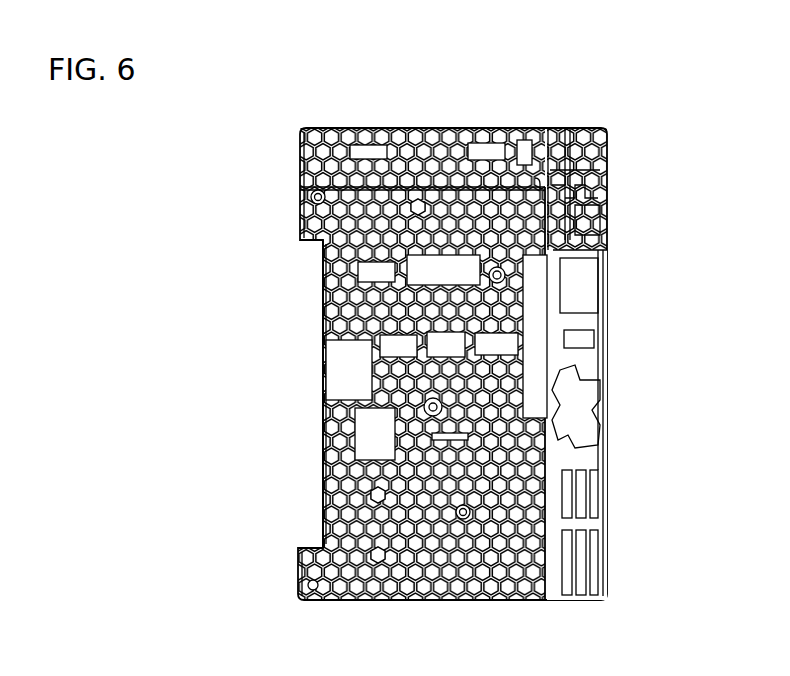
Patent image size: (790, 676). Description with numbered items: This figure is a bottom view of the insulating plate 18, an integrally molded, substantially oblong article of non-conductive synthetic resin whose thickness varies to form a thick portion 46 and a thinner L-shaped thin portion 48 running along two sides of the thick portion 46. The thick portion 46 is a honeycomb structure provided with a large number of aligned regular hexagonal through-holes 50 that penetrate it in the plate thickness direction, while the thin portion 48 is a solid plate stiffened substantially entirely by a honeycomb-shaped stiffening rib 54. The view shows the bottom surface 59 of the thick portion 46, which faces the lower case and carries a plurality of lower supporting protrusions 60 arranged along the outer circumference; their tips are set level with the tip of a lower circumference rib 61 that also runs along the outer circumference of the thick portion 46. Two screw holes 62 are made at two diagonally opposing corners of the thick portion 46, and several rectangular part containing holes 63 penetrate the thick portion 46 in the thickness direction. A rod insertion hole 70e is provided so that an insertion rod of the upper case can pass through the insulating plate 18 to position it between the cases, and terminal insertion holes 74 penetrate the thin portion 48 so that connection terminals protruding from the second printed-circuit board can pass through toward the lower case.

The insulating plate 18 is at (603, 82).
The thick portion 46 is at (290, 225).
The thin portion 48 is at (620, 211).
The regular hexagonal through-holes 50 is at (419, 200).
The stiffening rib 54 is at (437, 158).
The bottom surface 59 is at (403, 318).
The lower supporting protrusions 60 is at (520, 257).
The lower circumference rib 61 is at (560, 238).
The screw holes 62 is at (540, 182).
The part containing holes 63 is at (372, 272).
The rod insertion hole 70e is at (318, 190).
The terminal insertion holes 74 is at (370, 148).